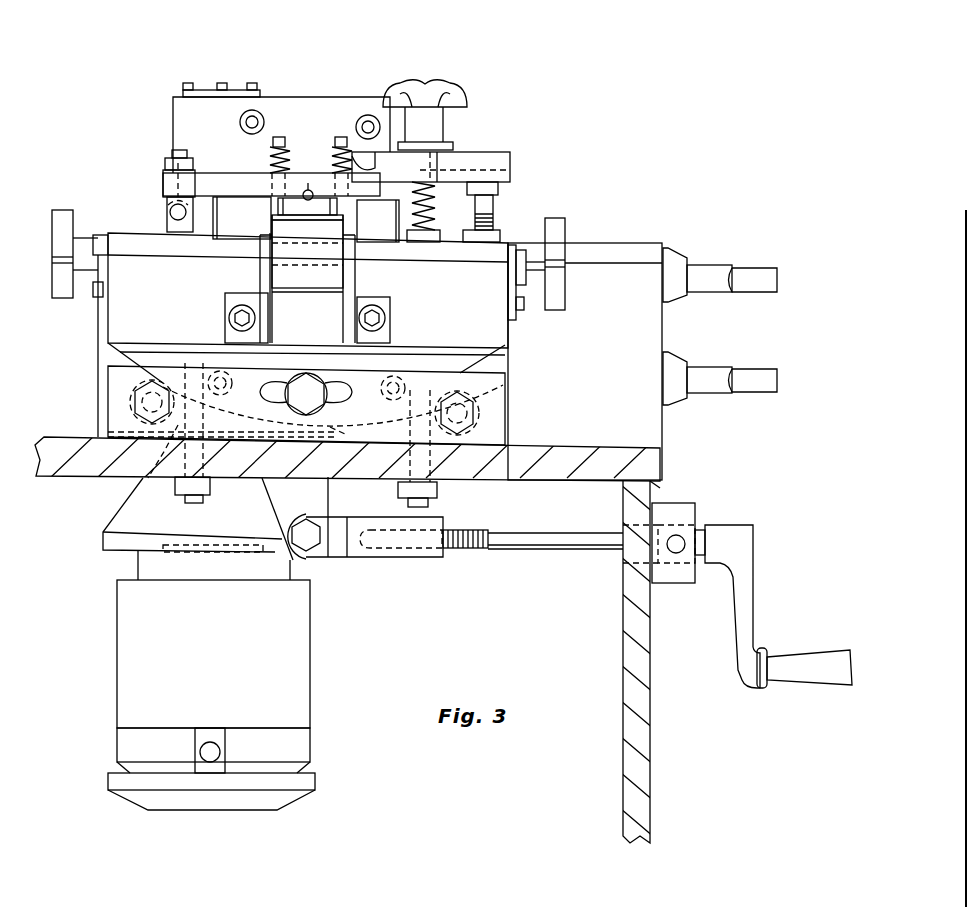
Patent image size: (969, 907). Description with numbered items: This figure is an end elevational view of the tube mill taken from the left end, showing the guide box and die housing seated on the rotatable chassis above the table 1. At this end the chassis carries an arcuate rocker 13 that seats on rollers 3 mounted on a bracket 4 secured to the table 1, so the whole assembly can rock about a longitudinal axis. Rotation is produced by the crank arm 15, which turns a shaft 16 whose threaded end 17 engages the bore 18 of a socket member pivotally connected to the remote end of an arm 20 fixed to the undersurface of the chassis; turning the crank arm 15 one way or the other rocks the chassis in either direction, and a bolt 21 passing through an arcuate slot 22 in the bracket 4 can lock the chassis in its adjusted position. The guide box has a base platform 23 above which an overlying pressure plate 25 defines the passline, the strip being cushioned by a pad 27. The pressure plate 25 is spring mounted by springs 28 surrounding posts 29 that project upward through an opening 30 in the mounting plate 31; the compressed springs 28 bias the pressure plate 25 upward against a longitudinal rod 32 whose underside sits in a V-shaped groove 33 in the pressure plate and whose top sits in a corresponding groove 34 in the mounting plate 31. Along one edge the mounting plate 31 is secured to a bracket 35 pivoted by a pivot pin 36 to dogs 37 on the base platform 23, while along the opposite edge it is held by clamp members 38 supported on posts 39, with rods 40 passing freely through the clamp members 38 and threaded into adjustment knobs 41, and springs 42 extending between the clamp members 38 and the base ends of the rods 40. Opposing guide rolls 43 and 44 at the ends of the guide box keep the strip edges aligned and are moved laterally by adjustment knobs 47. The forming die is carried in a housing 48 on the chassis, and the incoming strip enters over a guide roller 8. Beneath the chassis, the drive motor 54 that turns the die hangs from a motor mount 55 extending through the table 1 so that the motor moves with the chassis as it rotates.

The table 1 is at (463, 463).
The rollers 3 is at (135, 416).
The bracket 4 is at (494, 427).
The guide roller 8 is at (308, 278).
The arcuate rocker 13 is at (360, 424).
The crank arm 15 is at (748, 606).
The shaft 16 is at (522, 545).
The threaded end 17 is at (465, 548).
The bore 18 is at (407, 550).
The arm 20 is at (313, 497).
The bolt 21 is at (308, 392).
The arcuate slot 22 is at (340, 398).
The base platform 23 is at (118, 320).
The pressure plate 25 is at (295, 203).
The pad 27 is at (293, 214).
The springs 28 is at (268, 160).
The posts 29 is at (278, 137).
The opening 30 is at (272, 185).
The mounting plate 31 is at (214, 181).
The rod 32 is at (310, 192).
The V-shaped groove 33 is at (310, 217).
The groove 34 is at (308, 183).
The bracket 35 is at (173, 182).
The pivot pin 36 is at (170, 212).
The dogs 37 is at (163, 222).
The clamp members 38 is at (465, 158).
The posts 39 is at (494, 206).
The rods 40 is at (436, 210).
The adjustment knobs 41 is at (432, 92).
The springs 42 is at (436, 233).
The guide rolls 43 is at (228, 222).
The guide rolls 44 is at (385, 232).
The adjustment knobs 47 is at (63, 207).
The housing 48 is at (260, 108).
The drive motor 54 is at (290, 681).
The motor mount 55 is at (132, 512).